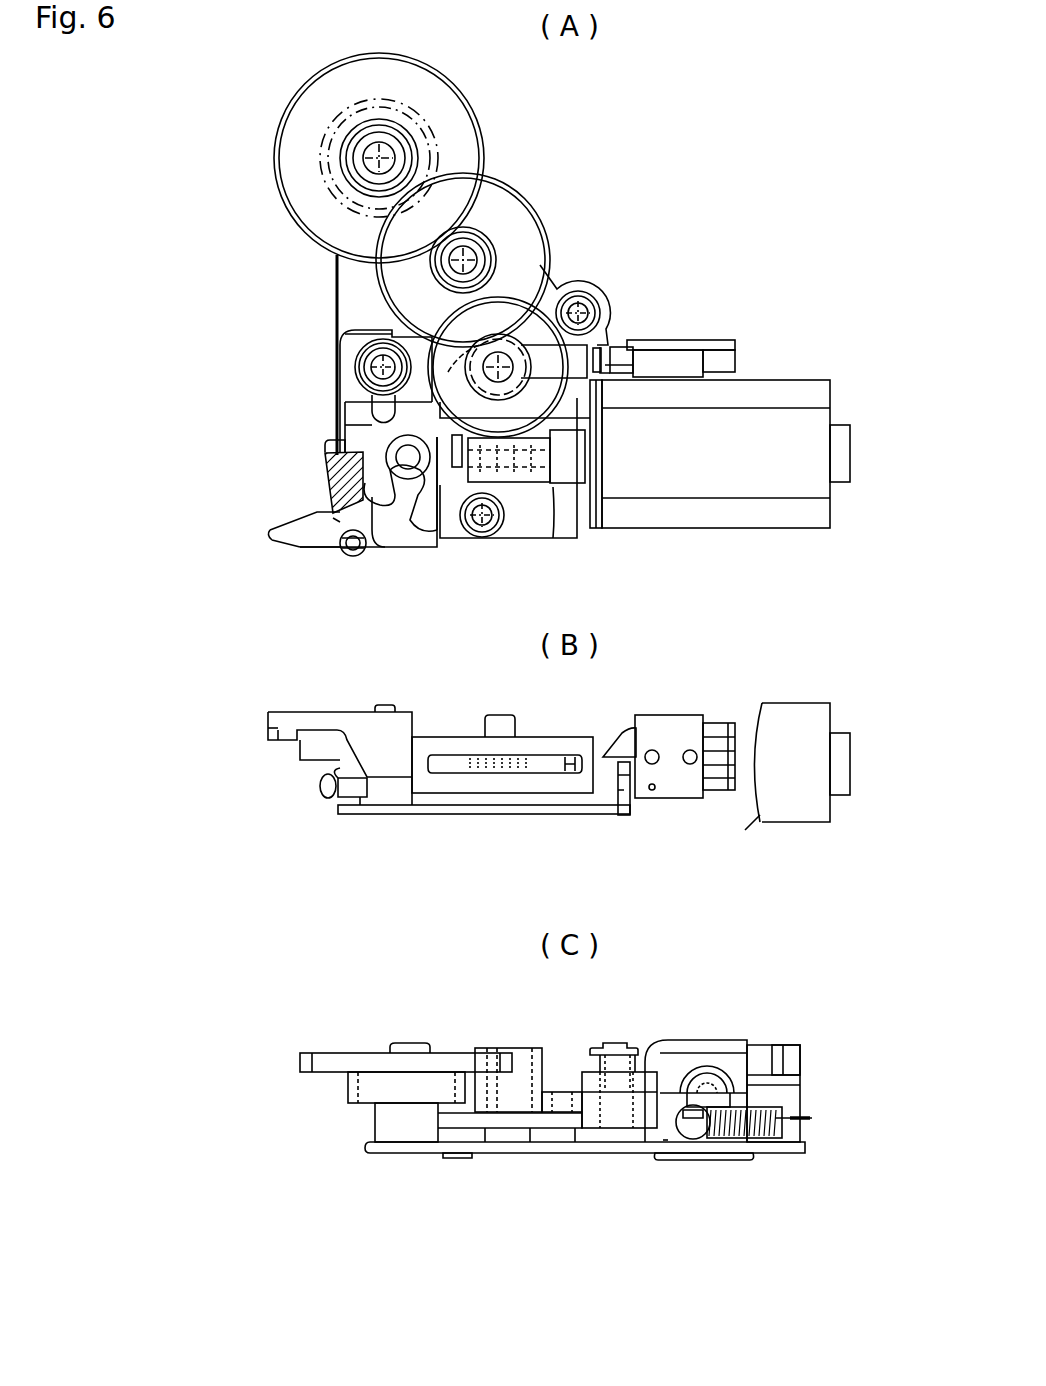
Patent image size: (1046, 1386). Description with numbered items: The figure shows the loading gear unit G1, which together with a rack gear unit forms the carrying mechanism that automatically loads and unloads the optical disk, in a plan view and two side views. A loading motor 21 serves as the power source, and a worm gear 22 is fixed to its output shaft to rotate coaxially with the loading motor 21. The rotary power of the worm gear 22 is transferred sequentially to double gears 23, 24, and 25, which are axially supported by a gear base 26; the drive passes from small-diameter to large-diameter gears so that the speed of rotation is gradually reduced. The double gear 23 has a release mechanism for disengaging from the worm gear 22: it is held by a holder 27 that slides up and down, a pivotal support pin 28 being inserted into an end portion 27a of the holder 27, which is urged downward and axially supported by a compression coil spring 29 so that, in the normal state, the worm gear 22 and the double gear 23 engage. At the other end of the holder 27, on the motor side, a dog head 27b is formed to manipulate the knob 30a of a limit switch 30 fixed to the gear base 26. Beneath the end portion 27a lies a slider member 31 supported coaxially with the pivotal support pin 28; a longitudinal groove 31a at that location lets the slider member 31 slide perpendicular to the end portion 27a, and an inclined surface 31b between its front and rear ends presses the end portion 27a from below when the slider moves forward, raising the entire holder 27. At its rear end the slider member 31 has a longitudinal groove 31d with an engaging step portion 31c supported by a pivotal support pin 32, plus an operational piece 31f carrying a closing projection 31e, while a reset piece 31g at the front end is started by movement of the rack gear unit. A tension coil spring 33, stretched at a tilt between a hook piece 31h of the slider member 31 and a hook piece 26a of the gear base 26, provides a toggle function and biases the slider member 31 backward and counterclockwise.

The loading motor 21 is at (760, 423).
The worm gear 22 is at (553, 488).
The double gear 23 is at (537, 325).
The double gear 24 is at (505, 210).
The double gear 25 is at (463, 118).
The gear base 26 is at (347, 272).
The hook piece 26a is at (353, 557).
The holder 27 is at (440, 352).
The end portion 27a is at (355, 364).
The dog head 27b is at (603, 352).
The pivotal support pin 28 is at (372, 388).
The compression coil spring 29 is at (592, 1060).
The limit switch 30 is at (680, 363).
The knob 30a is at (627, 374).
The slider member 31 is at (410, 527).
The longitudinal groove 31a is at (367, 422).
The inclined surface 31b is at (347, 472).
The engaging step portion 31c is at (377, 530).
The longitudinal groove 31d is at (415, 498).
The closing projection 31e is at (268, 533).
The operational piece 31f is at (322, 540).
The reset piece 31g is at (345, 333).
The hook piece 31h is at (325, 447).
The pivotal support pin 32 is at (540, 470).
The tension coil spring 33 is at (333, 518).
The loading gear unit G1 is at (645, 203).